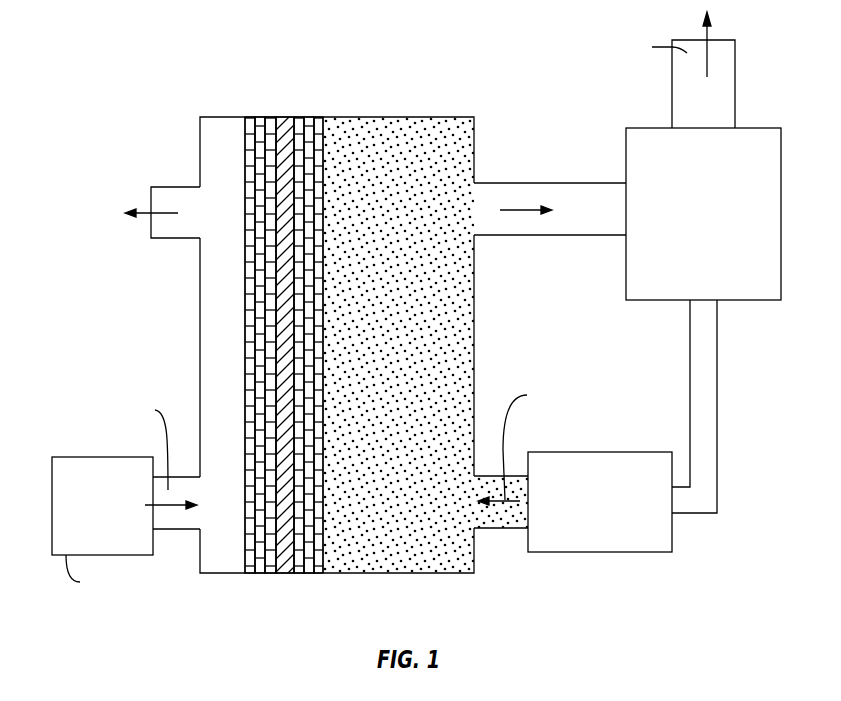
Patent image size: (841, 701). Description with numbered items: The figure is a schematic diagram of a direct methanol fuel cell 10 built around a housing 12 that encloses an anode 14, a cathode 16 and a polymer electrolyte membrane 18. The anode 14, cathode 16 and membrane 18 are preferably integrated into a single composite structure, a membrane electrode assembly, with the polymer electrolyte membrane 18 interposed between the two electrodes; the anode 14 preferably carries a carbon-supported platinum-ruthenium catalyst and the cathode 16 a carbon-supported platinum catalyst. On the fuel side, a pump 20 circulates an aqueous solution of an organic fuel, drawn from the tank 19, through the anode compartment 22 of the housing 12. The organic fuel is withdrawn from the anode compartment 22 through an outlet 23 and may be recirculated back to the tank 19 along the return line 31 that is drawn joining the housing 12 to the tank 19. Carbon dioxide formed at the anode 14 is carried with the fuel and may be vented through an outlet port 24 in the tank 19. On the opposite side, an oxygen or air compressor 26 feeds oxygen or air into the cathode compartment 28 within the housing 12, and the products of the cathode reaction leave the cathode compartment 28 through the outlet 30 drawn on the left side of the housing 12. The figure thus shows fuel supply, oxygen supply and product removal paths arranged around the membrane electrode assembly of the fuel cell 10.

The fuel cell 10 is at (162, 47).
The housing 12 is at (199, 318).
The anode 14 is at (308, 117).
The cathode 16 is at (259, 117).
The polymer electrolyte membrane 18 is at (285, 117).
The tank 19 is at (625, 280).
The pump 20 is at (610, 553).
The anode compartment 22 is at (476, 317).
The outlet 23 is at (475, 222).
The outlet port 24 is at (677, 98).
The oxygen or air compressor 26 is at (72, 457).
The cathode compartment 28 is at (199, 378).
The CO2 and water outlet 30 is at (182, 225).
The return conduit 31 is at (558, 195).